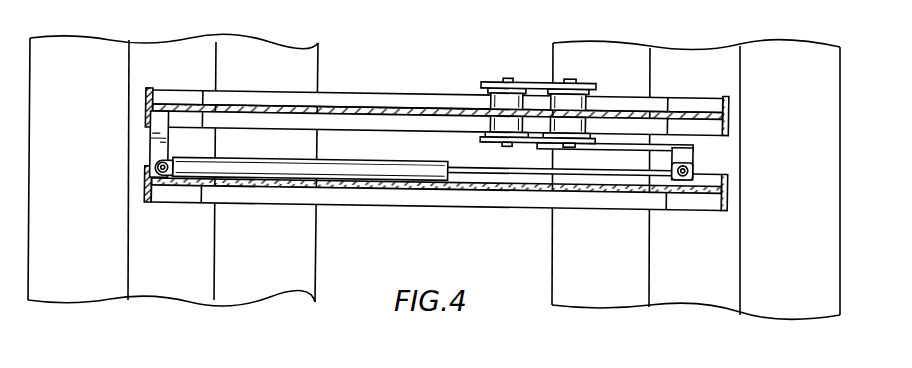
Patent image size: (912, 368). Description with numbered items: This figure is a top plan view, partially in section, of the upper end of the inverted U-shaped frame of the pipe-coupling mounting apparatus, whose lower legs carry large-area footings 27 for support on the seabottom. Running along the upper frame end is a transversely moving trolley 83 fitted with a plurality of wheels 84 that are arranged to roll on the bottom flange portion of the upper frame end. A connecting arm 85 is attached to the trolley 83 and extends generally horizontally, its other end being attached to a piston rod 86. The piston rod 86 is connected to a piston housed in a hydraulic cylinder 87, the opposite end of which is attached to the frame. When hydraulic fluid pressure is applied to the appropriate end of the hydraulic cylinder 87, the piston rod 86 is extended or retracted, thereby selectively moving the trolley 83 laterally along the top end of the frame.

The footing 27 is at (308, 64).
The trolley 83 is at (532, 80).
The wheels 84 is at (493, 88).
The connecting arm 85 is at (676, 141).
The piston rod 86 is at (532, 172).
The hydraulic cylinder 87 is at (380, 168).